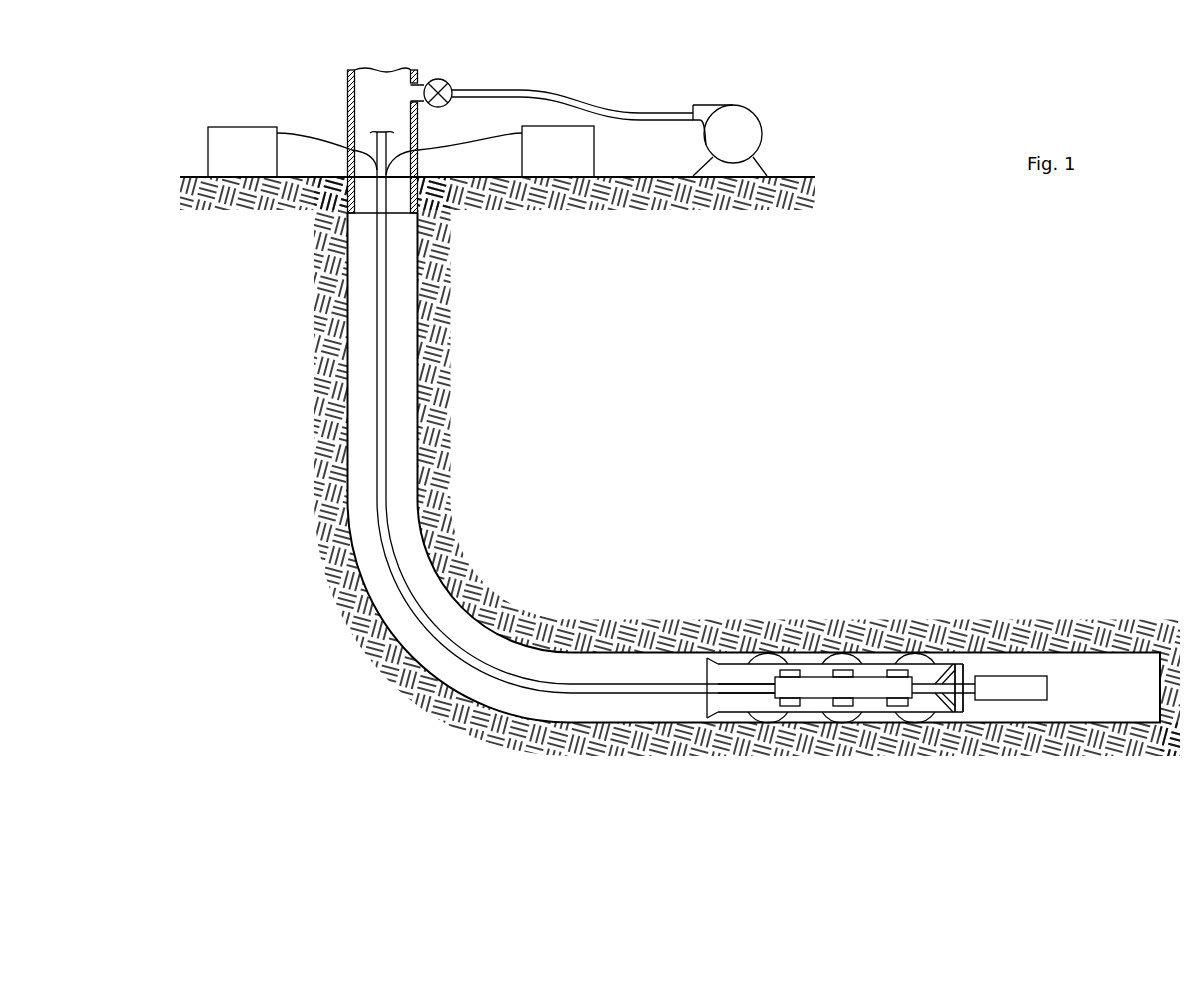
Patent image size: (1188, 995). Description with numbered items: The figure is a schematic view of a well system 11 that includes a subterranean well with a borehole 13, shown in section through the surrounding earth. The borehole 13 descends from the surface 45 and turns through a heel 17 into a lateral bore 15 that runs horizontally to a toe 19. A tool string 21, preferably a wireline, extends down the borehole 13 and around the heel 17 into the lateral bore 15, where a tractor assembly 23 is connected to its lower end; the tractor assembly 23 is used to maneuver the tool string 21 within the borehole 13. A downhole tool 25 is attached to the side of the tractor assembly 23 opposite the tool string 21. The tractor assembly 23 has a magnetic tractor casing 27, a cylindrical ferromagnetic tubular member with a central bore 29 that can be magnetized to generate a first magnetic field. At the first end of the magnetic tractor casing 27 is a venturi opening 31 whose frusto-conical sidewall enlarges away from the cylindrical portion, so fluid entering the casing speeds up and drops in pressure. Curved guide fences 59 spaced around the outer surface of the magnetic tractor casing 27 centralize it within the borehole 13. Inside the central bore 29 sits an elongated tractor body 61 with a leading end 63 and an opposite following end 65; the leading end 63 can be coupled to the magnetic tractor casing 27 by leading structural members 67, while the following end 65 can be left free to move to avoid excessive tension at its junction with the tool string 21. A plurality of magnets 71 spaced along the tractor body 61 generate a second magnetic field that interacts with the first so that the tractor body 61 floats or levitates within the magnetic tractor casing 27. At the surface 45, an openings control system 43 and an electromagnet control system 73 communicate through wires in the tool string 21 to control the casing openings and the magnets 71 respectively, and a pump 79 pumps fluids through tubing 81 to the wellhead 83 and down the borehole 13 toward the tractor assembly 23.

The well system 11 is at (770, 358).
The borehole 13 is at (414, 408).
The lateral bore 15 is at (1110, 657).
The heel 17 is at (500, 573).
The toe 19 is at (1115, 770).
The tool string 21 is at (387, 346).
The tractor assembly 23 is at (884, 648).
The downhole tool 25 is at (1015, 682).
The magnetic tractor casing 27 is at (882, 703).
The central bore 29 is at (763, 703).
The venturi opening 31 is at (705, 660).
The openings control system 43 is at (612, 146).
The surface 45 is at (792, 176).
The guide fences 59 is at (947, 662).
The tractor body 61 is at (820, 703).
The leading end 63 is at (915, 702).
The following end 65 is at (770, 655).
The leading structural members 67 is at (968, 703).
The magnets 71 is at (892, 703).
The electromagnet control system 73 is at (214, 104).
The pump 79 is at (751, 130).
The tubing 81 is at (608, 91).
The wellhead 83 is at (347, 88).